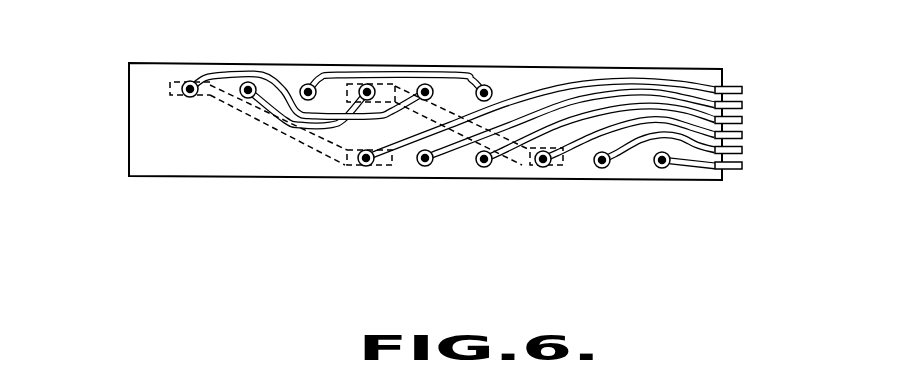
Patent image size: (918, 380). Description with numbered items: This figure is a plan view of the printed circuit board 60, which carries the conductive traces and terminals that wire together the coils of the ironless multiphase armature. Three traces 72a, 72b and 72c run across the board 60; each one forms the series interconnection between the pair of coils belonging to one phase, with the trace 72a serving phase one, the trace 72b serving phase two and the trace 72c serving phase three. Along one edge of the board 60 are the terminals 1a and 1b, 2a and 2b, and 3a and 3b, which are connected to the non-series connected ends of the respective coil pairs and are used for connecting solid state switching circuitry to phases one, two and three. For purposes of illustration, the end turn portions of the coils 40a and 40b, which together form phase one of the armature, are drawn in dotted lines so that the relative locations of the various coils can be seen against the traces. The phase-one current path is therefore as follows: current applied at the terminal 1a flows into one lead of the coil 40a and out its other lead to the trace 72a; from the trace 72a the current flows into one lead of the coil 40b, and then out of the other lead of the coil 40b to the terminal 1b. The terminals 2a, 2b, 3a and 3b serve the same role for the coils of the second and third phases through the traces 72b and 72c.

The printed circuit board 60 is at (130, 125).
The trace 72a is at (238, 72).
The trace 72b is at (323, 128).
The trace 72c is at (407, 72).
The coil 40a is at (344, 168).
The coil 40b is at (527, 163).
The terminal 1a is at (743, 90).
The terminal 2a is at (742, 105).
The terminal 3a is at (742, 120).
The terminal 1b is at (742, 137).
The terminal 2b is at (742, 150).
The terminal 3b is at (742, 165).